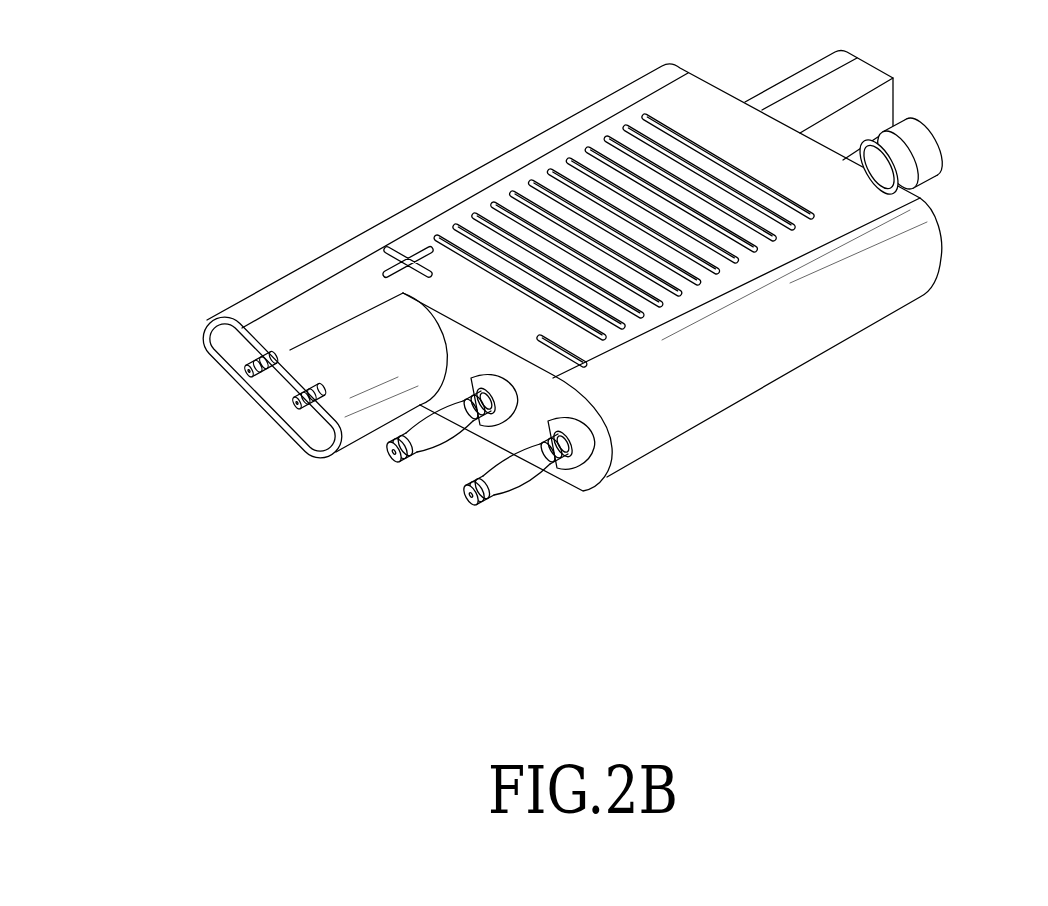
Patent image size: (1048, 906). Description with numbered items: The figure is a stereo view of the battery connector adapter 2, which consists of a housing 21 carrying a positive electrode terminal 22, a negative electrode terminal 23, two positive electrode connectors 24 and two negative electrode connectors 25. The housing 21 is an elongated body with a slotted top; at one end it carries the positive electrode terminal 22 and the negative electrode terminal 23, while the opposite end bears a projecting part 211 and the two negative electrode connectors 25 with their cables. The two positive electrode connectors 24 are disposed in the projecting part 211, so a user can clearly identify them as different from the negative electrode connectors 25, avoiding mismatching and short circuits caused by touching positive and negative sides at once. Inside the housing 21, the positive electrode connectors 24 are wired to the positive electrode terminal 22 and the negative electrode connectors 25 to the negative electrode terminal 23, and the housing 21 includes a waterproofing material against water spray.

The battery connector adapter 2 is at (570, 286).
The housing 21 is at (800, 347).
The projecting part 211 is at (371, 423).
The positive electrode terminal 22 is at (781, 88).
The negative electrode terminal 23 is at (918, 173).
The positive electrode connector 24 is at (248, 373).
The negative electrode connector 25 is at (433, 442).